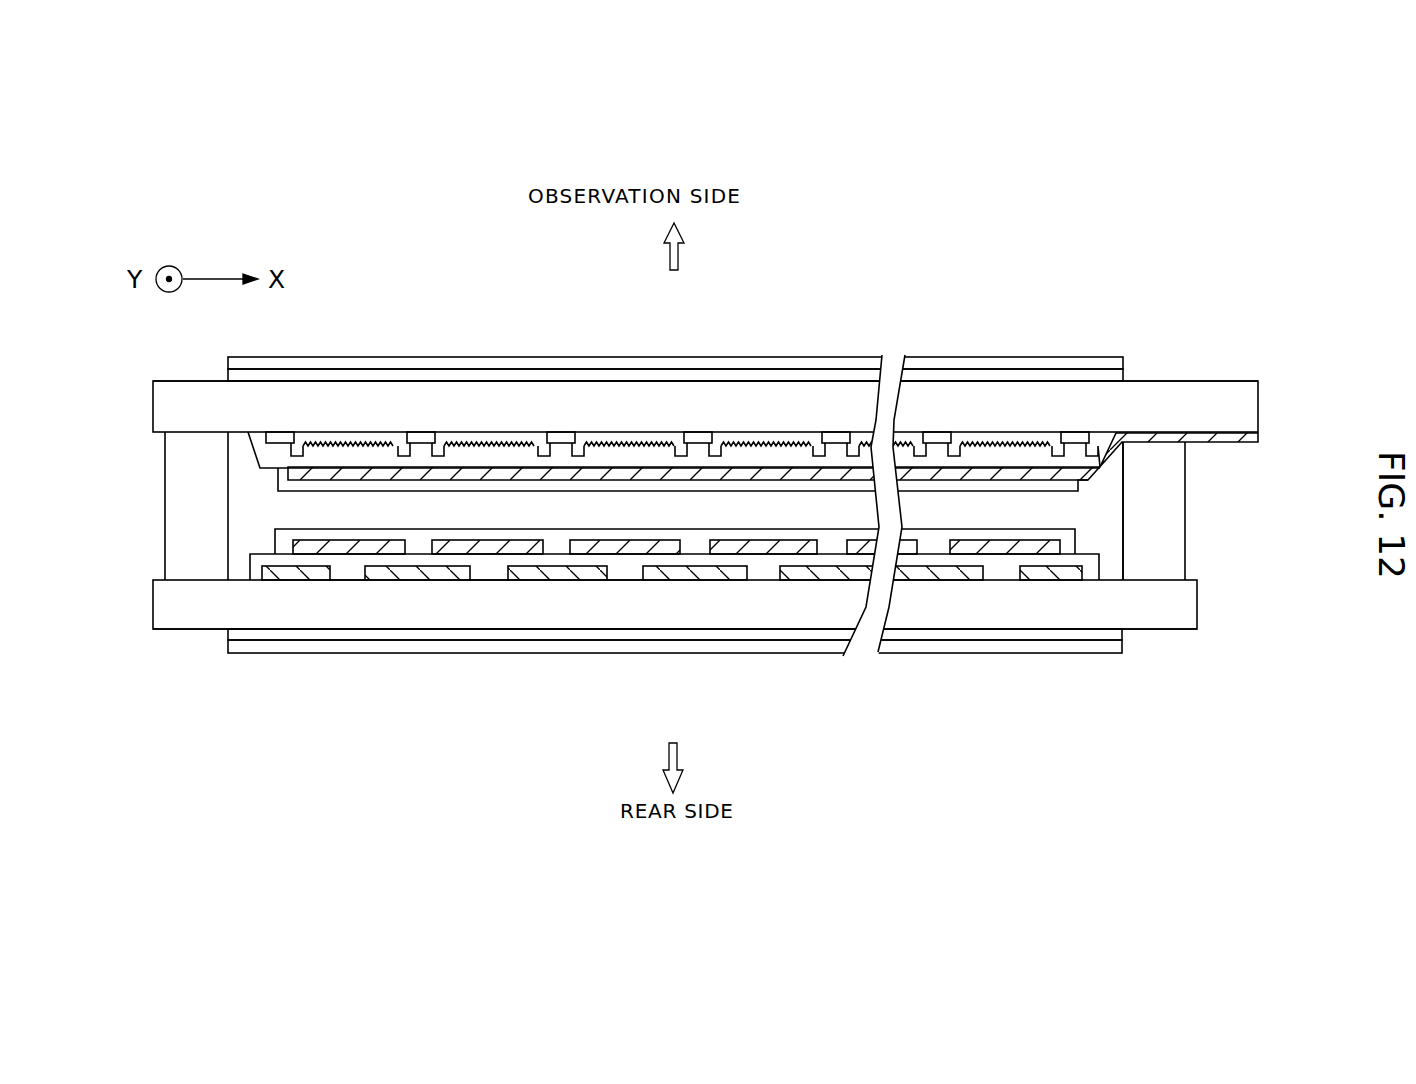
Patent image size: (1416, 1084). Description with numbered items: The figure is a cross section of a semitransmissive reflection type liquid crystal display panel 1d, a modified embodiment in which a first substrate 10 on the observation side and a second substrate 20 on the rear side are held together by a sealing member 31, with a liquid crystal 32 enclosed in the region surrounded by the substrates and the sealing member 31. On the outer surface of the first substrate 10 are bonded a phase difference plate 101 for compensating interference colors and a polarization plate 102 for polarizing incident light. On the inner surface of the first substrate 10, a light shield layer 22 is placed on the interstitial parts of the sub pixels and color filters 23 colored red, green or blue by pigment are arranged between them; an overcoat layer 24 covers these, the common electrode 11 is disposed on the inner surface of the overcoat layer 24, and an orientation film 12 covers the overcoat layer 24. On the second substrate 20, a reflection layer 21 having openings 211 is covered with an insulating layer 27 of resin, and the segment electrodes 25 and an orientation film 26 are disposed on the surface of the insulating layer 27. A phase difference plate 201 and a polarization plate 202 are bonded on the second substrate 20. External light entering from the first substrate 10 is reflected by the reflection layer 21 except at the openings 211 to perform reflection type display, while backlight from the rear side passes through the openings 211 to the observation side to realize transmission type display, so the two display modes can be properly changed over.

The liquid crystal display panel 1d is at (1012, 290).
The first substrate 10 is at (1233, 393).
The phase difference plate 101 is at (1127, 375).
The polarization plate 102 is at (1105, 362).
The common electrode 11 is at (1258, 432).
The orientation film 12 is at (280, 492).
The second substrate 20 is at (1188, 605).
The phase difference plate 201 is at (1122, 637).
The polarization plate 202 is at (1110, 653).
The reflection layer 21 is at (285, 583).
The openings 211 is at (367, 587).
The light shield layer 22 is at (279, 432).
The color filters 23 is at (347, 443).
The overcoat layer 24 is at (265, 458).
The segment electrode 25 is at (383, 556).
The orientation film 26 is at (277, 547).
The insulating layer 27 is at (255, 572).
The sealing member 31 is at (1163, 537).
The liquid crystal 32 is at (1102, 502).